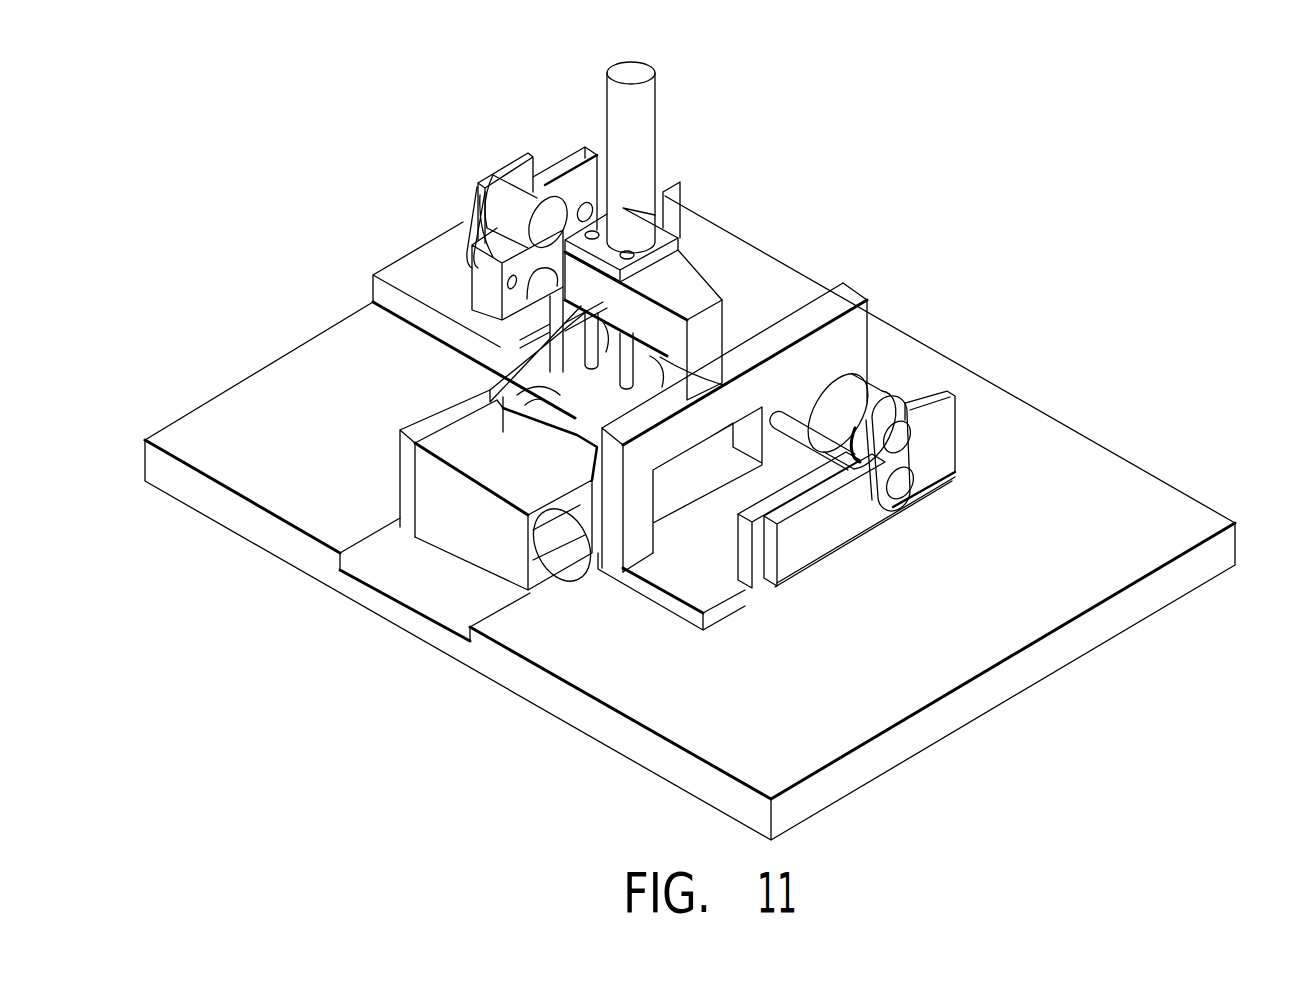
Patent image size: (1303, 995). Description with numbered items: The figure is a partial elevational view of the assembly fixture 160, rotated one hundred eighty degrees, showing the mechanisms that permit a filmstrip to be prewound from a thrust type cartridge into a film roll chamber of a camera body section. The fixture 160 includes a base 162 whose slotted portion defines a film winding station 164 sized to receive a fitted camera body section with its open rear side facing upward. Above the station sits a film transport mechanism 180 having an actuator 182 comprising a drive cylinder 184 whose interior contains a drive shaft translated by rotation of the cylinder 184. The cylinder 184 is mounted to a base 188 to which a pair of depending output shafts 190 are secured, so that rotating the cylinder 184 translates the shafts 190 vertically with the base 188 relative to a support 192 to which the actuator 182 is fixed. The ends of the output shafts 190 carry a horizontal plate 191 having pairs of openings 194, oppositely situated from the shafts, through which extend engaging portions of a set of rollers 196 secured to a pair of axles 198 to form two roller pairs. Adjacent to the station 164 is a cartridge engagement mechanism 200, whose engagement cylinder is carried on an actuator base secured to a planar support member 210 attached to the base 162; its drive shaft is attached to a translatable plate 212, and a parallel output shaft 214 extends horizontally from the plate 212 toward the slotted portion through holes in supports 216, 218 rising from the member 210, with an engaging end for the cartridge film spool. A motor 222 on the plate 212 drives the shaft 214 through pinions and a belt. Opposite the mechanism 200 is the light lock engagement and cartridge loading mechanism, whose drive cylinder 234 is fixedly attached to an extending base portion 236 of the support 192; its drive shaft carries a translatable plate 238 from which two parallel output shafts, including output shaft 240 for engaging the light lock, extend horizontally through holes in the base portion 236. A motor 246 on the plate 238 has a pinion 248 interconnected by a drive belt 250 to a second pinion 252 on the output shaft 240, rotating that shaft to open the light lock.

The assembly fixture 160 is at (952, 214).
The base 162 is at (1170, 500).
The film winding station 164 is at (330, 679).
The film transport mechanism 180 is at (662, 227).
The actuator 182 is at (593, 225).
The drive cylinder 184 is at (655, 120).
The base 188 is at (668, 220).
The output shafts 190 is at (680, 296).
The horizontal plate 191 is at (567, 363).
The support 192 is at (685, 270).
The openings 194 is at (530, 407).
The rollers 196 is at (723, 385).
The axles 198 is at (681, 332).
The cartridge engagement mechanism 200 is at (363, 123).
The planar support member 210 is at (378, 297).
The translatable plate 212 is at (505, 158).
The output shaft 214 is at (513, 293).
The support 216 is at (473, 267).
The support 218 is at (565, 315).
The motor 222 is at (502, 212).
The drive cylinder 234 is at (735, 505).
The extending base portion 236 is at (747, 587).
The translatable plate 238 is at (767, 587).
The output shaft 240 is at (773, 462).
The motor 246 is at (867, 390).
The pinion 248 is at (957, 470).
The drive belt 250 is at (877, 483).
The second pinion 252 is at (900, 503).